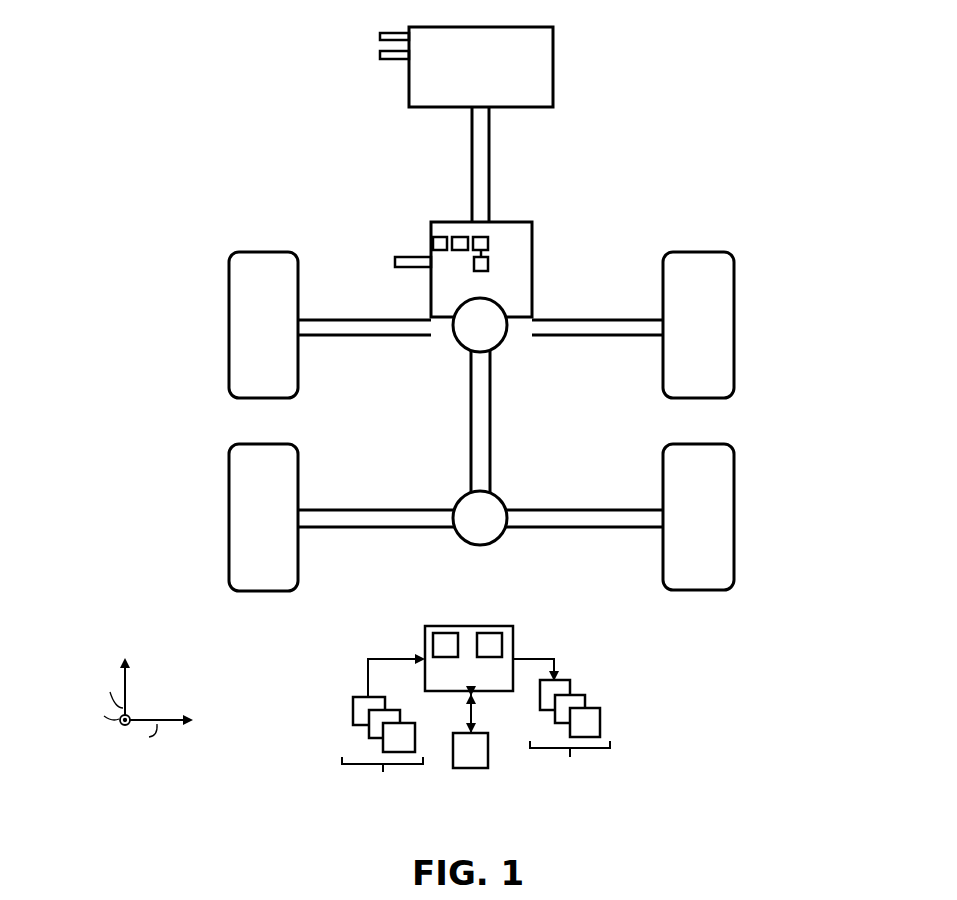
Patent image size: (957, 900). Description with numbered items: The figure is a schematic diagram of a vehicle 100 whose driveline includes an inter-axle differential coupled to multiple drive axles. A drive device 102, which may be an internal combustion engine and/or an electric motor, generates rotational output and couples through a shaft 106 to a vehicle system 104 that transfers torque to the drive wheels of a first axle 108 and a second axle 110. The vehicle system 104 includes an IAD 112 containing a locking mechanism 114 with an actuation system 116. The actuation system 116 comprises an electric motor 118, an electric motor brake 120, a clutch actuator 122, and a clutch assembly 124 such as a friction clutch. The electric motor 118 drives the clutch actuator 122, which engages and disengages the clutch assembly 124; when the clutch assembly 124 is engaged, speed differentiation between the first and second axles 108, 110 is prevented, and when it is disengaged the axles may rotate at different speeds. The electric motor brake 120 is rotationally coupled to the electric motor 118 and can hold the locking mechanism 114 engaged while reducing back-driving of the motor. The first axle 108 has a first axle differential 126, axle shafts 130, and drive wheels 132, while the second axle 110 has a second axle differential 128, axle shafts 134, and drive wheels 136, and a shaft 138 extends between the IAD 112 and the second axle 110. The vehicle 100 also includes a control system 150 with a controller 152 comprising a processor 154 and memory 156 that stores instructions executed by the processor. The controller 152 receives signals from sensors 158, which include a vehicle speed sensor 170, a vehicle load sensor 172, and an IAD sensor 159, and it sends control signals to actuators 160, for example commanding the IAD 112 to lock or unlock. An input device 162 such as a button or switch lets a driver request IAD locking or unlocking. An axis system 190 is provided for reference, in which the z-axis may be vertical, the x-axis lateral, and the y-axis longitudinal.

The vehicle 100 is at (794, 88).
The drive device 102 is at (556, 60).
The vehicle system 104 is at (358, 213).
The shaft 106 is at (490, 125).
The first axle 108 is at (392, 401).
The second axle 110 is at (414, 549).
The inter-axle differential (IAD) 112 is at (532, 254).
The locking mechanism 114 is at (413, 241).
The actuation system 116 is at (493, 233).
The electric motor 118 is at (462, 251).
The electric motor brake 120 is at (440, 237).
The clutch actuator 122 is at (490, 241).
The clutch assembly 124 is at (489, 265).
The first axle differential 126 is at (458, 342).
The second axle differential 128 is at (464, 500).
The axle shafts 130 is at (575, 318).
The drive wheels 132 is at (229, 285).
The axle shafts 134 is at (325, 510).
The drive wheels 136 is at (229, 472).
The shaft 138 is at (490, 416).
The control system 150 is at (582, 661).
The controller 152 is at (430, 626).
The processor 154 is at (433, 645).
The memory 156 is at (502, 645).
The sensors 158 is at (382, 729).
The IAD sensor 159 is at (410, 268).
The actuators 160 is at (561, 721).
The input device 162 is at (470, 768).
The vehicle speed sensor 170 is at (394, 32).
The vehicle load sensor 172 is at (394, 60).
The axis system 190 is at (166, 692).